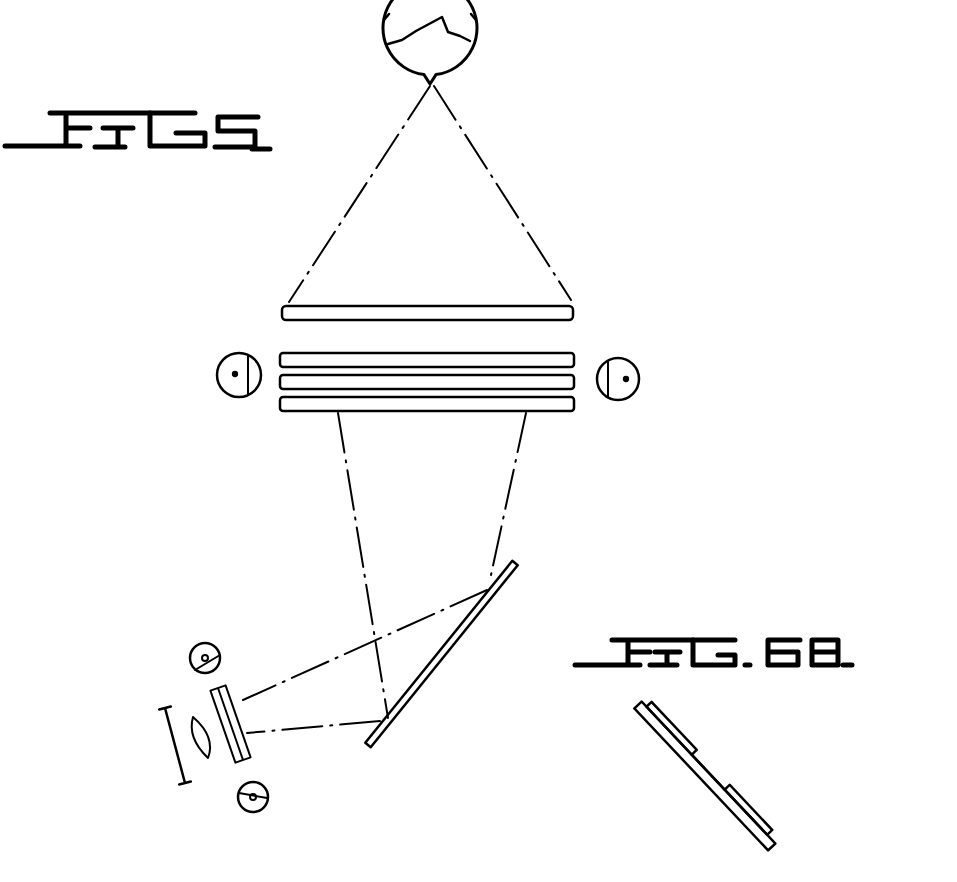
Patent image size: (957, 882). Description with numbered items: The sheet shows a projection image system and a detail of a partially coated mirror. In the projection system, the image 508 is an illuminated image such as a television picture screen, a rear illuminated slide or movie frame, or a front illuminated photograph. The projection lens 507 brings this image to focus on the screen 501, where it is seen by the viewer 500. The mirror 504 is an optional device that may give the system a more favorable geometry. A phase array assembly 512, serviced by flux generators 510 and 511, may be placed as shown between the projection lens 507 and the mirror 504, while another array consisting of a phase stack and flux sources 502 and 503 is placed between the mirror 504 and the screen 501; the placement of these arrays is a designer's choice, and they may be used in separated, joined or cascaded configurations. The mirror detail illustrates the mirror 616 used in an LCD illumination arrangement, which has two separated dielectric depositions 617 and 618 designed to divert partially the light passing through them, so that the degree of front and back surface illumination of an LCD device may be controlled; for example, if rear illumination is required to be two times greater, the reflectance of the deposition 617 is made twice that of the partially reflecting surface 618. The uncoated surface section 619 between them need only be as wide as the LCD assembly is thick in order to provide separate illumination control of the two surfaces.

In FIG. 5, the viewer 500 is at (468, 42).
In FIG. 5, the screen 501 is at (575, 313).
In FIG. 5, the flux source 502 is at (640, 379).
In FIG. 5, the flux source 503 is at (218, 378).
In FIG. 5, the mirror 504 is at (430, 675).
In FIG. 5, the projection lens 507 is at (212, 762).
In FIG. 5, the image 508 is at (172, 743).
In FIG. 5, the flux generator 510 is at (205, 643).
In FIG. 5, the flux generator 511 is at (268, 797).
In FIG. 5, the phase array assembly 512 is at (242, 717).
In FIG. 6B, the mirror 616 is at (713, 795).
In FIG. 6B, the dielectric deposition 617 is at (688, 723).
In FIG. 6B, the dielectric deposition 618 is at (760, 808).
In FIG. 6B, the uncoated surface section 619 is at (720, 763).